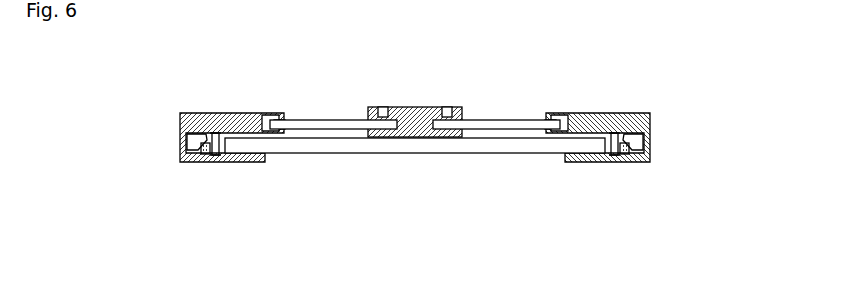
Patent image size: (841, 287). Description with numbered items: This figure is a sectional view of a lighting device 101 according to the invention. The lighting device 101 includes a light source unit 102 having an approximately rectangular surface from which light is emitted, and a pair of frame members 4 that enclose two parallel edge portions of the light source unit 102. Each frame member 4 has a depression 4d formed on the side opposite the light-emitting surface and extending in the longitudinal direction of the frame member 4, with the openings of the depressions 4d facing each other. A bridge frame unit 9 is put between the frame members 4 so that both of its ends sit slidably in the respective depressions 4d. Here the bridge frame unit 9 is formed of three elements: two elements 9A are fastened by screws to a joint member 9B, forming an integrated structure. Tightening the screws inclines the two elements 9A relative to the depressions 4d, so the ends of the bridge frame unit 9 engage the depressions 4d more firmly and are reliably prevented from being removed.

The frame member 4 is at (207, 163).
The depression 4d is at (271, 116).
The bridge frame unit 9 is at (415, 82).
The element 9A is at (347, 104).
The joint member 9B is at (401, 106).
The lighting device 101 is at (273, 193).
The light source unit 102 is at (401, 154).